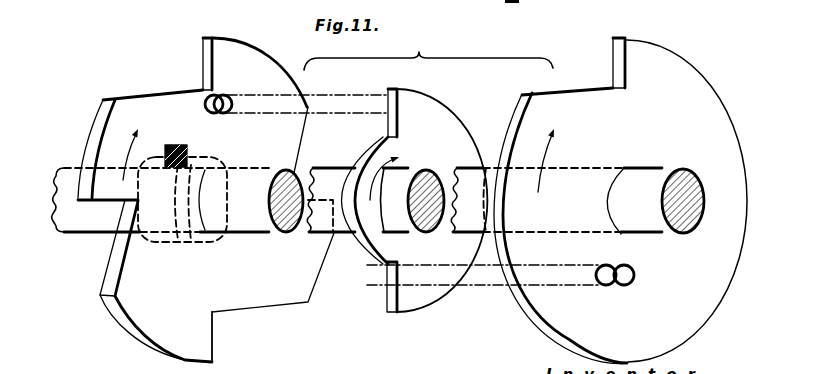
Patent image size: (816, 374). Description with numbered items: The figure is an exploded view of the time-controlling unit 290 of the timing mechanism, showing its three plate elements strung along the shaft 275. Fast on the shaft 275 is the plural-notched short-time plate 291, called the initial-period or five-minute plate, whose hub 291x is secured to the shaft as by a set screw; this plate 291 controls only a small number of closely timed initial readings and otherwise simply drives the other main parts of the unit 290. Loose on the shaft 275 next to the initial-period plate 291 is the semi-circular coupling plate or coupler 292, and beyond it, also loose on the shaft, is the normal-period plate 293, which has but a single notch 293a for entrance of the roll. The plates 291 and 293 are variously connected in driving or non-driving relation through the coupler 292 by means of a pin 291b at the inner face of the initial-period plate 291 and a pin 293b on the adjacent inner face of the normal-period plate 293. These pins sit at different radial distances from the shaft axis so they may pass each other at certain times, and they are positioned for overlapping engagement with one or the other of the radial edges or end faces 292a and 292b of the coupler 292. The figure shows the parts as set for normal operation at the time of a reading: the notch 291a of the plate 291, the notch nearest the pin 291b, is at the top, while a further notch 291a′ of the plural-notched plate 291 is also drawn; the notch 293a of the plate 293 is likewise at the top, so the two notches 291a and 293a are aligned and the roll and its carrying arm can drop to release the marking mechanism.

The shaft 275 is at (68, 184).
The time-controlling unit 290 is at (428, 53).
The short-time plate 291 is at (145, 310).
The notch 291a is at (198, 89).
The slot lower edge bar 291a′ is at (122, 205).
The pin 291b is at (214, 98).
The hub 291x is at (172, 243).
The semi-circular coupling plate 292 is at (450, 124).
The radial edge 292a is at (399, 108).
The radial edge 292b is at (397, 294).
The normal-period plate 293 is at (669, 57).
The notch 293a is at (614, 68).
The pin 293b is at (606, 287).